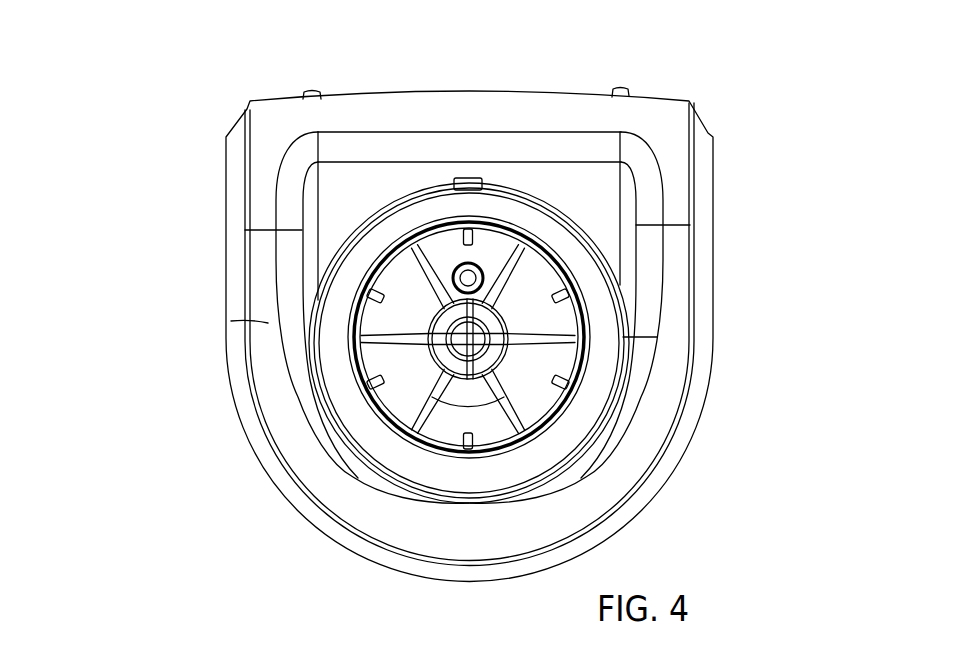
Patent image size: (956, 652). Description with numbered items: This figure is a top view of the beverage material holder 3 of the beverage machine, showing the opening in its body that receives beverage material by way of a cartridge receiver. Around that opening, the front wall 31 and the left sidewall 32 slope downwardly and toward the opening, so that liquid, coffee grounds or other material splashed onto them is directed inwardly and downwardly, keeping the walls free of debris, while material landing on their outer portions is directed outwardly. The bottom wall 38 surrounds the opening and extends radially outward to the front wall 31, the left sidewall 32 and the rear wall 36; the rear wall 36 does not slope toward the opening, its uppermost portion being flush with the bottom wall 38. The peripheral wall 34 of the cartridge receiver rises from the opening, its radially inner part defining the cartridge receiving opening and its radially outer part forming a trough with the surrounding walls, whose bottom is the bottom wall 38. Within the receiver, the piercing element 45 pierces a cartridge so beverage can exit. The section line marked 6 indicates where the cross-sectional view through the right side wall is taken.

The holder 3 is at (744, 236).
The front wall 31 is at (415, 531).
The left sidewall 32 is at (673, 340).
The peripheral wall 34 is at (570, 247).
The rear wall 36 is at (492, 118).
The bottom wall 38 is at (570, 200).
The piercing element 45 is at (462, 278).
The section line 6- 6 is at (473, 379).